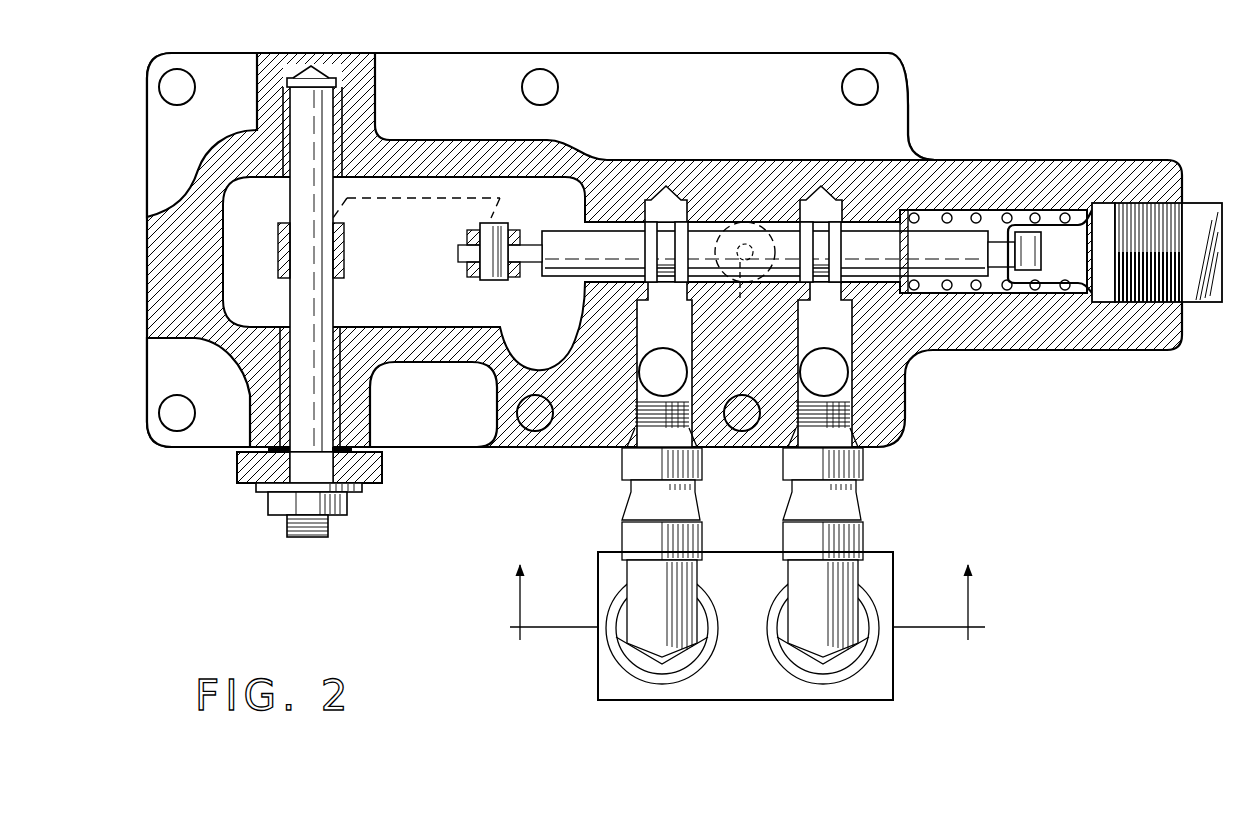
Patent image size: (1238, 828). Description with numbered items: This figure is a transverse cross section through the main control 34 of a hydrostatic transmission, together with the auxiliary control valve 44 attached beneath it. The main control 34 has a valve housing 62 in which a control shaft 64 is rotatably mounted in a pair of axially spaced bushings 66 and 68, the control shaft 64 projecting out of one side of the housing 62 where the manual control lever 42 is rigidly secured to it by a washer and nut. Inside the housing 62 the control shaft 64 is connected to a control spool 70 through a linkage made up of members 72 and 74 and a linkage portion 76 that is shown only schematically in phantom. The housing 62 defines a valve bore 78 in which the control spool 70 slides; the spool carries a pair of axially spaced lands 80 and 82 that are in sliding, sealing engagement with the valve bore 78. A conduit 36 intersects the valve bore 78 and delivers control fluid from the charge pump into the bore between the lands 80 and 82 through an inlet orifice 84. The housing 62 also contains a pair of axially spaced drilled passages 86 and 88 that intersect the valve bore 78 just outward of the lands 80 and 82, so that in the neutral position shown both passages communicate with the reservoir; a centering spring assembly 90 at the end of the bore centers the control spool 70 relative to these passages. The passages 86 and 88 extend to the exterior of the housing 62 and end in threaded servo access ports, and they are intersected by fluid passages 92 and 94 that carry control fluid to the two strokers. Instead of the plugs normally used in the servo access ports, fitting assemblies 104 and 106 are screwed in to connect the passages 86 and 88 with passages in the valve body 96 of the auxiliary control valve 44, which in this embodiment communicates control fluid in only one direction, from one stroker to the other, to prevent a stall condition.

The main control 34 is at (975, 136).
The conduit 36 is at (752, 282).
The manual control lever 42 is at (242, 468).
The auxiliary control valve 44 is at (920, 546).
The valve housing 62 is at (498, 150).
The control shaft 64 is at (298, 202).
The bushing 66 is at (340, 133).
The bushing 68 is at (343, 340).
The control spool 70 is at (566, 216).
The linkage member 72 is at (345, 264).
The linkage member 74 is at (514, 282).
The linkage portion 76 is at (435, 208).
The valve bore 78 is at (607, 231).
The land 80 is at (668, 216).
The land 82 is at (823, 216).
The inlet orifice 84 is at (735, 291).
The drilled passage 86 is at (640, 290).
The drilled passage 88 is at (850, 290).
The centering spring assembly 90 is at (998, 230).
The fluid passage 92 is at (641, 377).
The fluid passage 94 is at (802, 377).
The valve body 96 is at (757, 574).
The fitting assembly 104 is at (618, 500).
The fitting assembly 106 is at (870, 512).